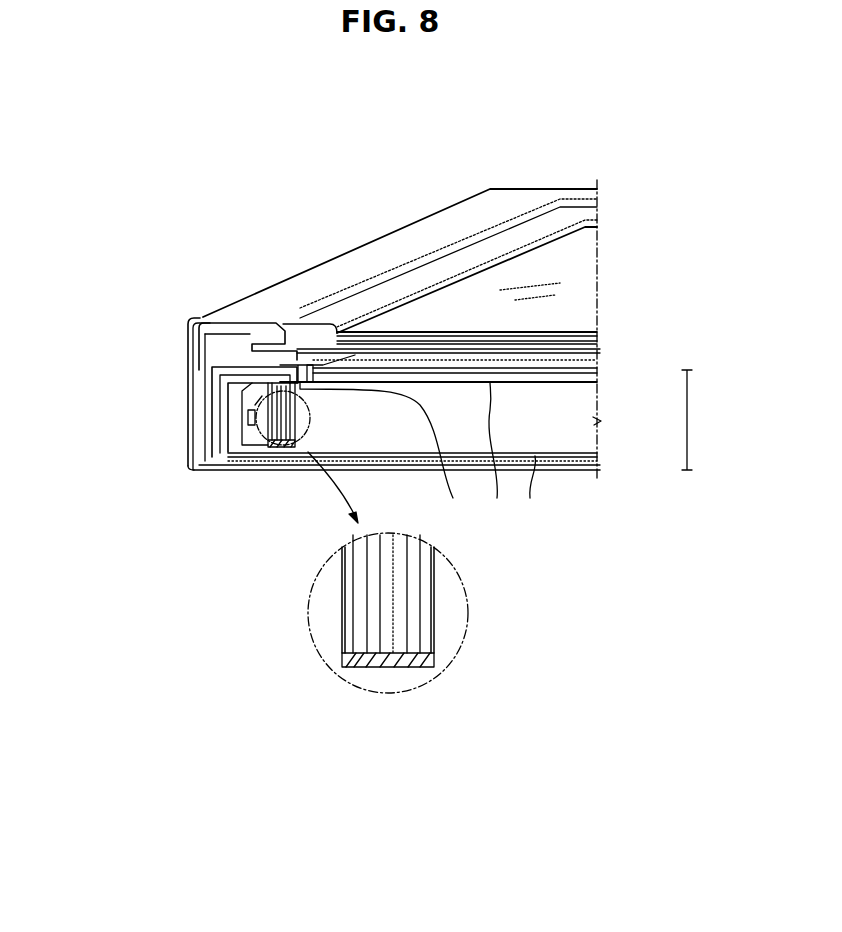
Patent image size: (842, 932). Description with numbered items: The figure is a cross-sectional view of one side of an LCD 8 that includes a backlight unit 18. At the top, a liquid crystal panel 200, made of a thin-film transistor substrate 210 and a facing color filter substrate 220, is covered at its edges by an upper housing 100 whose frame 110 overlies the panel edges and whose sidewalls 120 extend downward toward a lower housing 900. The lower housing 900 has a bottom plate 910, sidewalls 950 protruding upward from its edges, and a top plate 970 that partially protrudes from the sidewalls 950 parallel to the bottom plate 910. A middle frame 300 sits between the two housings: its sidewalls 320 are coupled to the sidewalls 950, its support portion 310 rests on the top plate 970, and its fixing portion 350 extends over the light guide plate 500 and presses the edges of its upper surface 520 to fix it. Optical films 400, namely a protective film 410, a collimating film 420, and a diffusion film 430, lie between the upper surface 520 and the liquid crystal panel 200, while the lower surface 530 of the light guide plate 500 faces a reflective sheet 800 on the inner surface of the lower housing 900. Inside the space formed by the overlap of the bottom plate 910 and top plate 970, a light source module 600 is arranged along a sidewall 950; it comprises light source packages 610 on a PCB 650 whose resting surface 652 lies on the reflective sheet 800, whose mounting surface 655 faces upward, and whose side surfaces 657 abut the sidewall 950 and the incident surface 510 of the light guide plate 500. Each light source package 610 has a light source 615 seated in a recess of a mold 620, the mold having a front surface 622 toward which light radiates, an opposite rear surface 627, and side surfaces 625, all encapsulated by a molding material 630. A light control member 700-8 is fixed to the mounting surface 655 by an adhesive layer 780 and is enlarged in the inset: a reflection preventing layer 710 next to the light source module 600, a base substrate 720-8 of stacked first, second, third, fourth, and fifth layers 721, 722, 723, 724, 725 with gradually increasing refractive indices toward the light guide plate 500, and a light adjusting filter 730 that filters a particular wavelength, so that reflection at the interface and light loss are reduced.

The LCD 8 is at (368, 152).
The upper housing 100 is at (347, 363).
The frame 110 is at (207, 323).
The sidewalls 120 is at (190, 338).
The liquid crystal panel 200 is at (493, 342).
The thin-film transistor substrate 210 is at (598, 344).
The color filter substrate 220 is at (598, 334).
The middle frame 300 is at (144, 349).
The support portion 310 is at (232, 358).
The sidewalls 320 is at (220, 385).
The fixing portion 350 is at (240, 327).
The optical films 400 is at (477, 386).
The protective film 410 is at (598, 371).
The collimating film 420 is at (588, 375).
The diffusion film 430 is at (578, 382).
The light guide plate 500 is at (497, 519).
The incident surface 510 is at (388, 450).
The upper surface 520 is at (497, 450).
The lower surface 530 is at (531, 487).
The light source module 600 is at (186, 462).
The light source packages 610 is at (186, 419).
The light source 615 is at (262, 440).
The mold 620 is at (148, 403).
The front surface 622 is at (250, 410).
The side surfaces 625 is at (248, 423).
The rear surface 627 is at (243, 393).
The molding material 630 is at (238, 447).
The PCB 650 is at (276, 519).
The resting surface 652 is at (247, 455).
The mounting surface 655 is at (272, 452).
The side surfaces 657 is at (301, 452).
The light control member 700-8 is at (467, 597).
The reflection preventing layer 710 is at (345, 627).
The base substrate 720-8 is at (340, 737).
The first layer 721 is at (362, 650).
The second layer 722 is at (375, 650).
The third layer 723 is at (388, 650).
The fourth layer 724 is at (402, 650).
The fifth layer 725 is at (415, 650).
The light adjusting filter 730 is at (428, 618).
The adhesive layer 780 is at (434, 664).
The reflective sheet 800 is at (598, 457).
The lower housing 900 is at (396, 317).
The bottom plate 910 is at (270, 445).
The sidewalls 950 is at (210, 352).
The top plate 970 is at (243, 352).
The backlight unit 18 is at (695, 420).